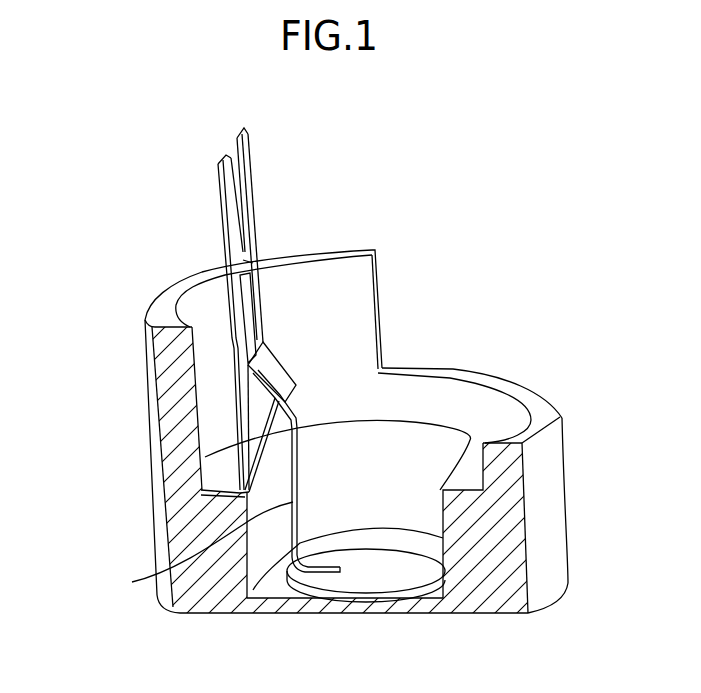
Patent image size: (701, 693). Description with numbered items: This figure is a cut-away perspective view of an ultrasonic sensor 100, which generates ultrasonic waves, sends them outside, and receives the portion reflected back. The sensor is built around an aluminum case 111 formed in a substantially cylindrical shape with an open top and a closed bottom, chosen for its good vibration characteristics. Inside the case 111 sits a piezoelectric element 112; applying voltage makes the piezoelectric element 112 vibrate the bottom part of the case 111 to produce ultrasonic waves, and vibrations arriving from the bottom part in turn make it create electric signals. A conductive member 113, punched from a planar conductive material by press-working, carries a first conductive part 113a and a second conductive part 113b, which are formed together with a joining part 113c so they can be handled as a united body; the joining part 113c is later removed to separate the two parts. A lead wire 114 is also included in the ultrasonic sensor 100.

The ultrasonic sensor 100 is at (61, 117).
The case 111 is at (558, 503).
The piezoelectric element 112 is at (390, 583).
The conductive member 113 is at (231, 347).
The first conductive part 113a is at (249, 143).
The second conductive part 113b is at (220, 207).
The joining part 113c is at (257, 254).
The lead wire 114 is at (133, 582).